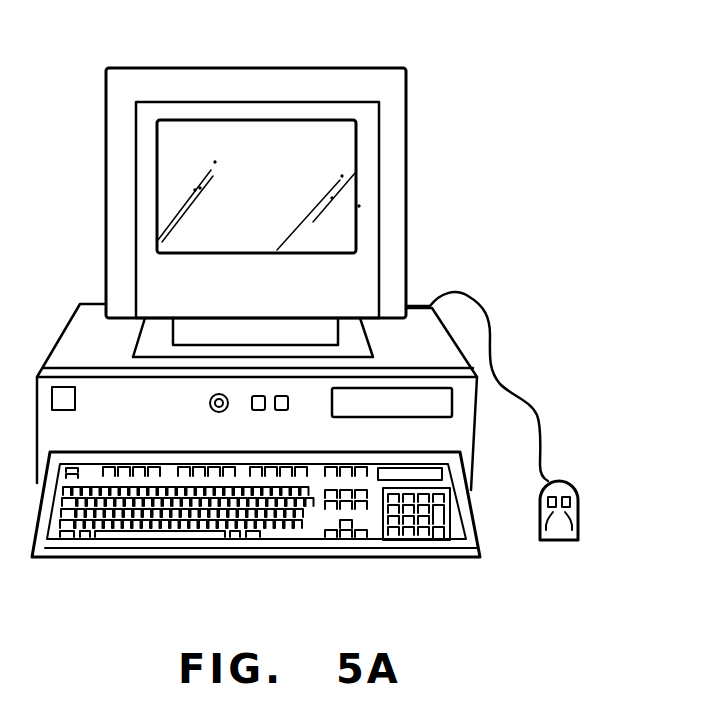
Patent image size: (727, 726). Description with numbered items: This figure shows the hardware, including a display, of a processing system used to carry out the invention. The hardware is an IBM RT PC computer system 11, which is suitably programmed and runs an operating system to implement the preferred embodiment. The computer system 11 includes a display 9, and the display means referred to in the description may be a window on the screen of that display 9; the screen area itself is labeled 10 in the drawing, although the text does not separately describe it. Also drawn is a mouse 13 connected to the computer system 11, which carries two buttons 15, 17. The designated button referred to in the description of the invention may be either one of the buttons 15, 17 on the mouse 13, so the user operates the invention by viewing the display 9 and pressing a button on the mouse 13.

The display 9 is at (106, 68).
The display screen 10 is at (170, 156).
The computer system 11 is at (422, 233).
The mouse 13 is at (577, 508).
The button 15 is at (541, 524).
The button 17 is at (580, 518).